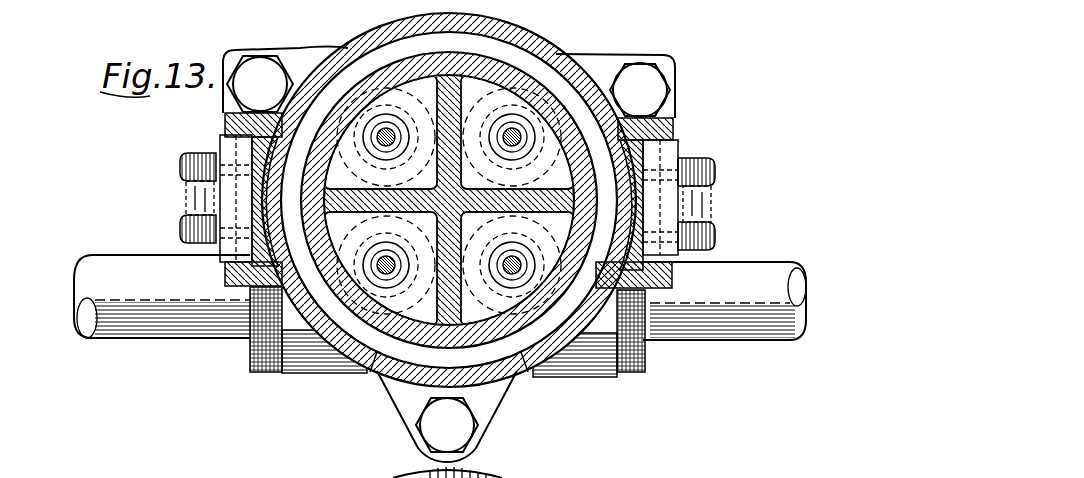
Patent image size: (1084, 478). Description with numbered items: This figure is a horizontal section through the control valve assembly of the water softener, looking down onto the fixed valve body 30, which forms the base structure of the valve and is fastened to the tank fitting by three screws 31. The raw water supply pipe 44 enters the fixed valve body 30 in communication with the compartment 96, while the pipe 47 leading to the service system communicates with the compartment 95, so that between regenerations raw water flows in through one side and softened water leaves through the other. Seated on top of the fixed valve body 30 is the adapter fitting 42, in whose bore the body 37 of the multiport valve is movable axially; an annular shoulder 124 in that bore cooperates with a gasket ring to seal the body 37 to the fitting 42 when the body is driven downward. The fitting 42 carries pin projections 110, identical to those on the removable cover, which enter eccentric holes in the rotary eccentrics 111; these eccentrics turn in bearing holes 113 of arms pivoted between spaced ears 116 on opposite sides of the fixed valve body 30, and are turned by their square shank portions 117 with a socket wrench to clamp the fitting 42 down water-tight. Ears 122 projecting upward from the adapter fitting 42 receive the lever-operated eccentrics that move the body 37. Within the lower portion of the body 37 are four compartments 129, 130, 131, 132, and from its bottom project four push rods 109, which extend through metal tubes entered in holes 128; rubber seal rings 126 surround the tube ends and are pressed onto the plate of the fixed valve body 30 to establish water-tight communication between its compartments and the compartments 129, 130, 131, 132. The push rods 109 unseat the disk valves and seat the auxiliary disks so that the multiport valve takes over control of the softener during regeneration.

The screws 31 is at (254, 75).
The compartment 129 is at (383, 75).
The compartment 130 is at (470, 87).
The annular shoulder 124 is at (537, 72).
The rotary eccentrics 111 is at (230, 147).
The pin projections 110 is at (673, 148).
The bearing holes 113 is at (690, 160).
The ears 116 is at (178, 230).
The square shank portions 117 is at (190, 203).
The push rods 109 is at (386, 140).
The rubber seal rings 126 is at (512, 140).
The ears 122 is at (386, 263).
The holes 128 is at (512, 263).
The supply pipe 44 is at (181, 325).
The pipe 47 is at (754, 332).
The fixed valve body 30 is at (290, 375).
The compartment 96 is at (315, 352).
The compartment 132 is at (383, 368).
The compartment 131 is at (549, 346).
The adapter fitting 42 is at (558, 360).
The compartment 95 is at (606, 376).
The body 37 is at (494, 352).